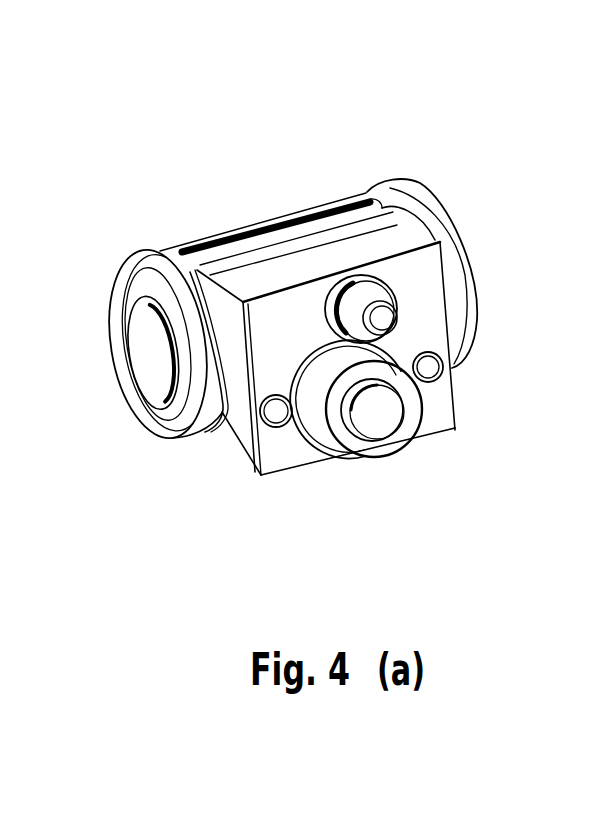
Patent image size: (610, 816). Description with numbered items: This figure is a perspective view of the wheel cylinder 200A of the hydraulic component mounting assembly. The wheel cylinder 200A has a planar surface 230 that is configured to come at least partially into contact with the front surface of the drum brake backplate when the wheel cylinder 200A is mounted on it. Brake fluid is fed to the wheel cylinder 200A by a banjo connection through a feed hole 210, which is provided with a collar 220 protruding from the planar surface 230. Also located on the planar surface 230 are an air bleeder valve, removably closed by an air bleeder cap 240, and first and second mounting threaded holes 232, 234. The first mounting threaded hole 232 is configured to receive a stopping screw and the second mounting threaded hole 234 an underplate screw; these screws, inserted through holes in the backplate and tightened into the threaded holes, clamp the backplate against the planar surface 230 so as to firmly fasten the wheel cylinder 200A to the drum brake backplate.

The wheel cylinder 200A is at (340, 158).
The feed hole 210 is at (378, 422).
The collar 220 is at (325, 364).
The planar surface 230 is at (438, 293).
The air bleeder cap 240 is at (387, 325).
The first mounting threaded hole 232 is at (284, 424).
The second mounting threaded hole 234 is at (440, 381).